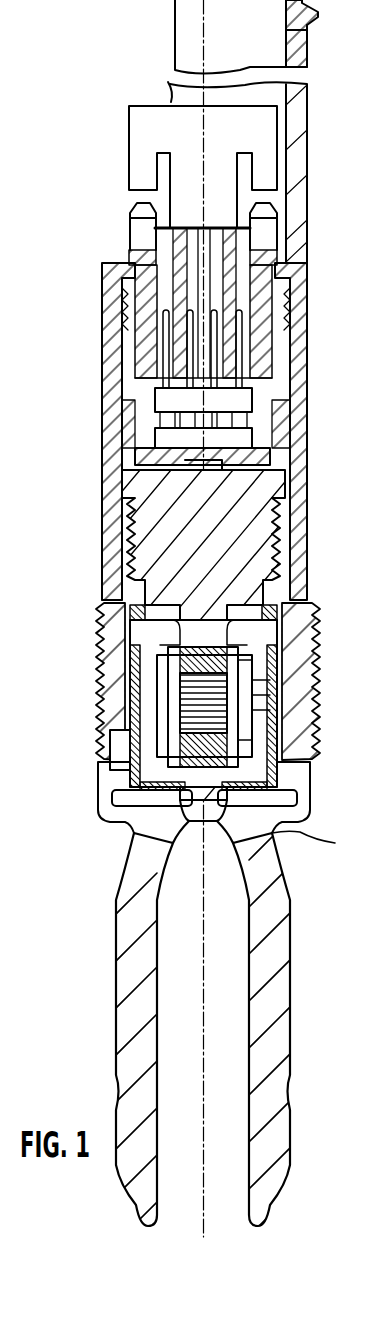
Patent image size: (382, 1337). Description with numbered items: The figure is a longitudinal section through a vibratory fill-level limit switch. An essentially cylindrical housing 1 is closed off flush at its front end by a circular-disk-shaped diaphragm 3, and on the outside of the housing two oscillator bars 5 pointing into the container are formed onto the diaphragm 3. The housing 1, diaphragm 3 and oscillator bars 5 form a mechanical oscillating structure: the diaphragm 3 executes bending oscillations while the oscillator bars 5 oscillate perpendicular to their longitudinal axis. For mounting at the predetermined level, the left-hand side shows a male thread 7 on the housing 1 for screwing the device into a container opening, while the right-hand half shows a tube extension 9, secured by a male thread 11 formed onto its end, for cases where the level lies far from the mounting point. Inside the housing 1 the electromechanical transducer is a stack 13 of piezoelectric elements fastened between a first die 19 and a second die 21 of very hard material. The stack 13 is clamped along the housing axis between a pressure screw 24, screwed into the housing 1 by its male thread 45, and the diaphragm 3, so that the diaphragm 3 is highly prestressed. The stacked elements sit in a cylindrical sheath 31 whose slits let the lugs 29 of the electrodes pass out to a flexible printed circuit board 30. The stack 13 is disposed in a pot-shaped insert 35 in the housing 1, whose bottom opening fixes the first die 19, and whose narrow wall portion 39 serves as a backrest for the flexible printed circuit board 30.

The housing 1 is at (118, 533).
The diaphragm 3 is at (310, 836).
The oscillator bars 5 is at (125, 1022).
The male thread 7 is at (95, 648).
The tube extension 9 is at (310, 142).
The male thread 11 is at (306, 12).
The stack 13 is at (131, 690).
The first die 19 is at (125, 808).
The second die 21 is at (100, 598).
The pressure screw 24 is at (233, 522).
The lugs 29 is at (270, 710).
The flexible printed circuit board 30 is at (157, 713).
The sheath 31 is at (252, 745).
The insert 35 is at (115, 750).
The narrow wall portion 39 is at (134, 833).
The male thread 45 is at (290, 558).